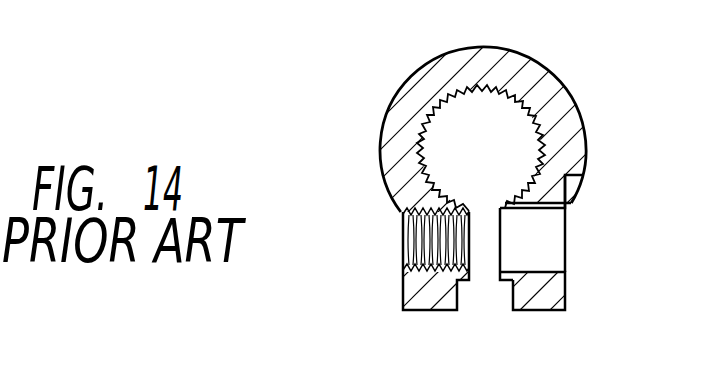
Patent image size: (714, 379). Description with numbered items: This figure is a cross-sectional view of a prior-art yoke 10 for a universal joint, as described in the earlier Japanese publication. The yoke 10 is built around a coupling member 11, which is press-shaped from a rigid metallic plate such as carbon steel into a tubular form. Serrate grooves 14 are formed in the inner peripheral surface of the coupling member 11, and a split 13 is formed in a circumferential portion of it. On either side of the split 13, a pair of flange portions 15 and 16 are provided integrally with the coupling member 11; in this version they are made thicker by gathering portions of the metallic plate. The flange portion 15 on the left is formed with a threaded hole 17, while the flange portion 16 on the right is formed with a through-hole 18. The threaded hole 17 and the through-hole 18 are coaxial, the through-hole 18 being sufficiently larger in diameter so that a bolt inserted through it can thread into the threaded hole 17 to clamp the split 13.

The yoke 10 is at (389, 75).
The coupling member 11 is at (507, 55).
The split 13 is at (483, 258).
The serrate grooves 14 is at (530, 127).
The flange portion 15 is at (413, 288).
The flange portion 16 is at (563, 288).
The threaded hole 17 is at (412, 247).
The through-hole 18 is at (545, 270).